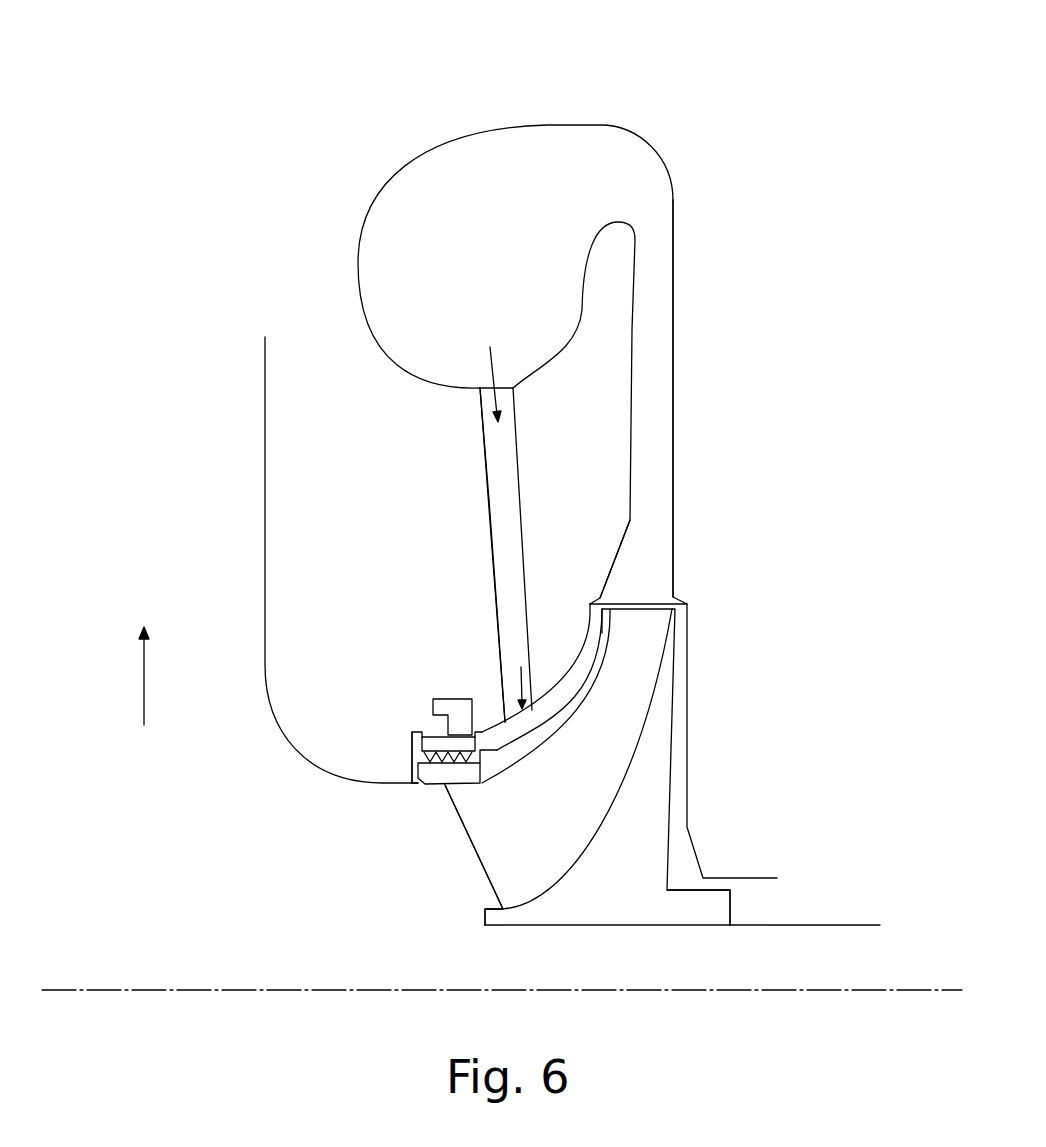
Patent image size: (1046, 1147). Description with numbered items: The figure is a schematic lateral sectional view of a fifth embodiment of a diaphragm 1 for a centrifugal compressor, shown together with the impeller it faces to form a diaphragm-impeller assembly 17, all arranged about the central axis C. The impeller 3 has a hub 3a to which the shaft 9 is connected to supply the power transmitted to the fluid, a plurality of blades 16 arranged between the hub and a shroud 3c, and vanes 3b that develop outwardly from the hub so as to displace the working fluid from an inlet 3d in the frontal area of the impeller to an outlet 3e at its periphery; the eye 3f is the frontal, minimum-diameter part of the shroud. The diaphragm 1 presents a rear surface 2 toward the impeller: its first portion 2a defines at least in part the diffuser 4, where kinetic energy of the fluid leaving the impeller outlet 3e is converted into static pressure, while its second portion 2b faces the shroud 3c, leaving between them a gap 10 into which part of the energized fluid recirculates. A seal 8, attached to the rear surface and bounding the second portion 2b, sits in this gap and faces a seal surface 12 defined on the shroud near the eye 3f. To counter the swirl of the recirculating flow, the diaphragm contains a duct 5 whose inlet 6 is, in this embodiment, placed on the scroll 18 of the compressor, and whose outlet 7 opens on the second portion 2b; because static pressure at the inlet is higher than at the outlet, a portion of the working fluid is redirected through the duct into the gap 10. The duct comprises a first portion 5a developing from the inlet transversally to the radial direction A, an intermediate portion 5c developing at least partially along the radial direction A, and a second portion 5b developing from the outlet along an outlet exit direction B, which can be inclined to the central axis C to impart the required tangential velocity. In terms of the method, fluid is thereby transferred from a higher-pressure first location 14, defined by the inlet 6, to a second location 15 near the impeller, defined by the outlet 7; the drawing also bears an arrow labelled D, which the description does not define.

The diaphragm 1 is at (258, 445).
The rear surface 2 is at (645, 356).
The first portion 2a is at (630, 520).
The second portion 2b is at (570, 667).
The impeller 3 is at (737, 914).
The hub 3a is at (701, 892).
The vanes 3b is at (497, 898).
The shroud 3c is at (433, 786).
The inlet 3d is at (463, 786).
The outlet 3e is at (612, 612).
The eye 3f is at (420, 786).
The diffuser 4 is at (674, 405).
The duct 5 is at (478, 478).
The first portion 5a is at (480, 410).
The second portion 5b is at (497, 671).
The intermediate portion 5c is at (488, 513).
The inlet 6 is at (500, 380).
The outlet 7 is at (528, 712).
The seal 8 is at (410, 740).
The shaft 9 is at (837, 925).
The gap 10 is at (580, 690).
The seal surface 12 is at (507, 752).
The first location 14 is at (490, 387).
The second location 15 is at (515, 752).
The blades 16 is at (484, 889).
The diaphragm-impeller assembly 17 is at (184, 310).
The scroll 18 is at (549, 122).
The radial direction A is at (144, 676).
The outlet exit direction B is at (520, 677).
The central axis C is at (887, 988).
The flow direction D is at (498, 394).